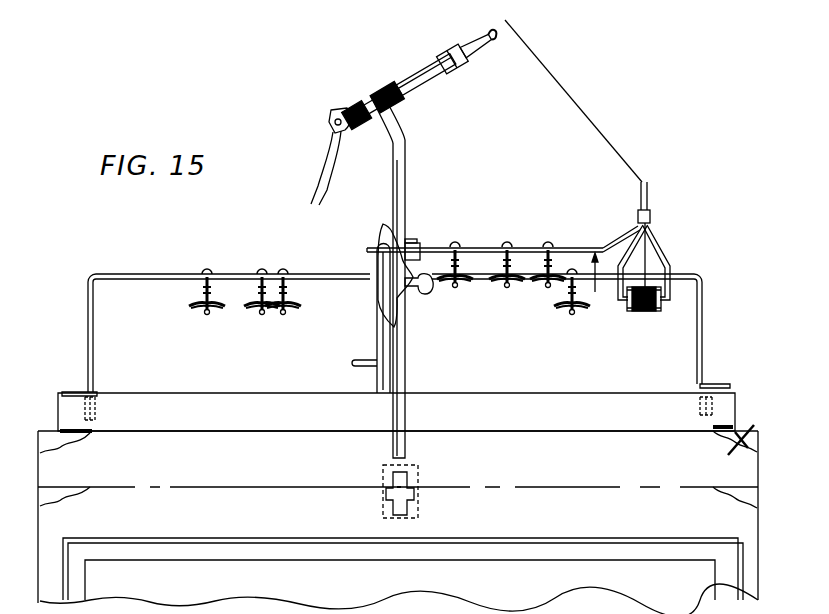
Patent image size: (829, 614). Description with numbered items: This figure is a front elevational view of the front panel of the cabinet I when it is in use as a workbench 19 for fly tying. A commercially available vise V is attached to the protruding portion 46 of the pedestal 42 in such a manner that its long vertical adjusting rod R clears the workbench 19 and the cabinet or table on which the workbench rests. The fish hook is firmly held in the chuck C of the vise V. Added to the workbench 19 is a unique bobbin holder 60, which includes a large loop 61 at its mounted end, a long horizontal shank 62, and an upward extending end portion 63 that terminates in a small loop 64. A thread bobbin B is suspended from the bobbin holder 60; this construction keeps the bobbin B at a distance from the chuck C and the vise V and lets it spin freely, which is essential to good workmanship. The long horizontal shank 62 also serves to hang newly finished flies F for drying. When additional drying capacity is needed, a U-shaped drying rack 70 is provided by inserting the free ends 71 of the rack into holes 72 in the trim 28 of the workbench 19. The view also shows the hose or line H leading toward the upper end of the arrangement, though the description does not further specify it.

The U-shaped drying rack 70 is at (173, 270).
The free ends 71 is at (94, 351).
The holes 72 is at (97, 406).
The trim 28 is at (63, 412).
The large loop 61 is at (378, 257).
The protruding portion 46 is at (374, 262).
The vise V is at (415, 230).
The long horizontal shank 62 is at (460, 247).
The flies F is at (510, 246).
The upward extending end portion 63 is at (617, 240).
The small loop 64 is at (651, 229).
The thread bobbin B is at (671, 289).
The bobbin holder 60 is at (595, 292).
The long vertical adjusting rod R is at (400, 342).
The pedestal 42 is at (408, 372).
The workbench 19 is at (723, 407).
The cabinet I is at (750, 428).
The chuck C is at (468, 31).
The hose H is at (514, 17).